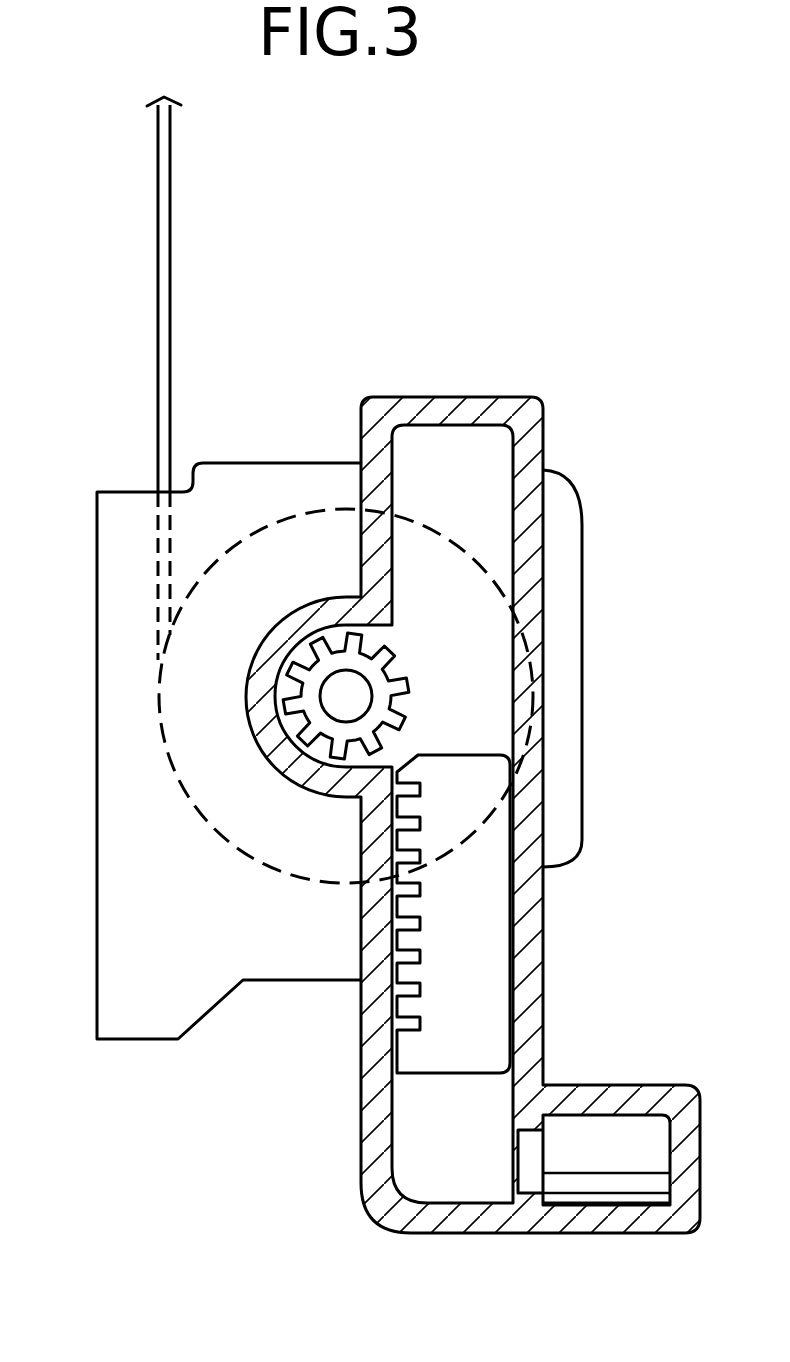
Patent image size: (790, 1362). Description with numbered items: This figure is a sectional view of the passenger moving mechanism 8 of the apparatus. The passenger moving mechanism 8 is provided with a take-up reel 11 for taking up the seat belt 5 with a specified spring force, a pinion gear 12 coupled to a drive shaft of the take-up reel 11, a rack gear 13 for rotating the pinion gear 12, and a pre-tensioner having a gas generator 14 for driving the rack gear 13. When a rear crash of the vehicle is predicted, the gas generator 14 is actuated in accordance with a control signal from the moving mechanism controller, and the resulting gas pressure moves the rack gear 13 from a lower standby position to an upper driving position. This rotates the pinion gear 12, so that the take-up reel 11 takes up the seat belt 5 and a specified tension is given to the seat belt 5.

The seat belt 5 is at (156, 238).
The passenger moving mechanism 8 is at (580, 470).
The take-up reel 11 is at (290, 462).
The pinion gear 12 is at (412, 680).
The rack gear 13 is at (483, 950).
The gas generator 14 is at (622, 1147).